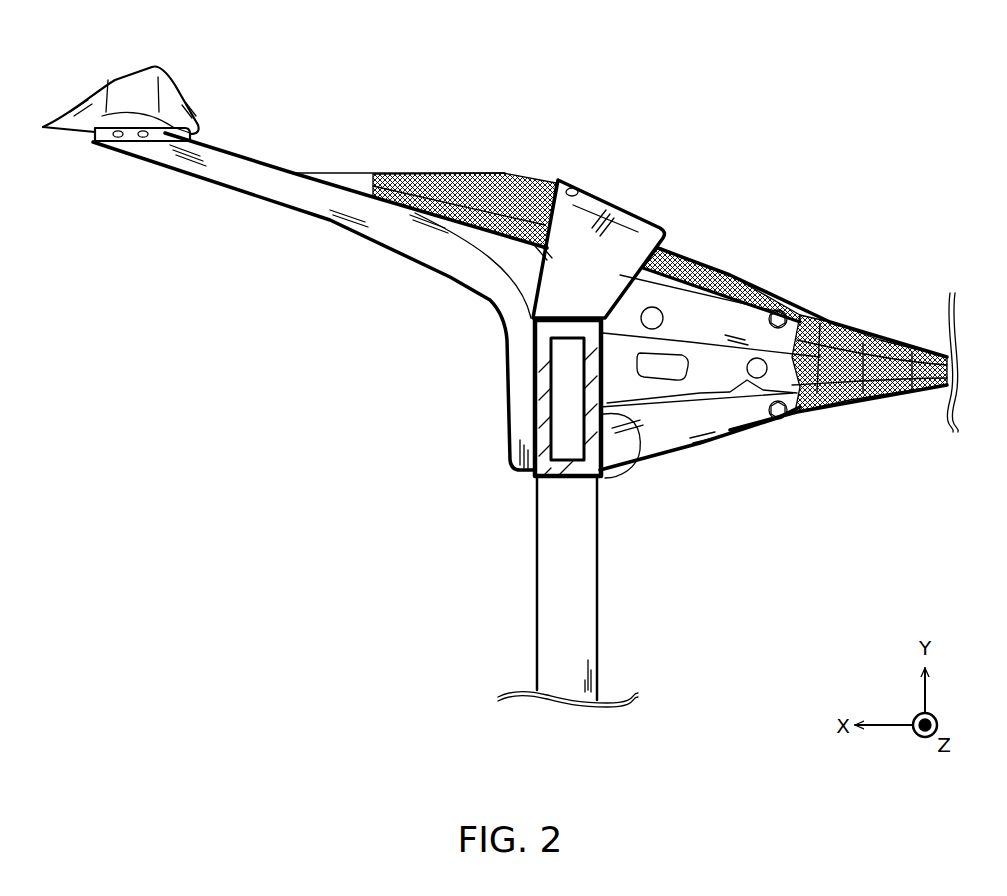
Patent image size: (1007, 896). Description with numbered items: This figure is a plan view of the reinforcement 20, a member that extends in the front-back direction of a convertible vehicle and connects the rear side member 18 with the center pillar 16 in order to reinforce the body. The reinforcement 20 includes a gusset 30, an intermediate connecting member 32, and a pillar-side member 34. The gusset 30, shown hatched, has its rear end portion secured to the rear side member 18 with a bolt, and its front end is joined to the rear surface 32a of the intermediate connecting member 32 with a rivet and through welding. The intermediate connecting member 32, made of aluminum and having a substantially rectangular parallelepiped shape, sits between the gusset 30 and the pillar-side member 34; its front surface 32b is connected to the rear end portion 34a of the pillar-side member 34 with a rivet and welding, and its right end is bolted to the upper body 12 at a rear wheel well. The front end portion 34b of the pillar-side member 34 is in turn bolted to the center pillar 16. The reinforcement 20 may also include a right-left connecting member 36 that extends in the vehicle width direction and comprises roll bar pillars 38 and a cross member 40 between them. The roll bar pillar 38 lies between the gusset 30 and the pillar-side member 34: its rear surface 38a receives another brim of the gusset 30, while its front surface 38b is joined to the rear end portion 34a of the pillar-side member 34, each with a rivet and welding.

The upper body 12 is at (693, 104).
The center pillar 16 is at (130, 85).
The rear side member 18 is at (857, 340).
The reinforcement 20 is at (355, 425).
The gusset 30 is at (680, 414).
The intermediate connecting member 32 is at (592, 238).
The rear surface 32a is at (693, 270).
The front surface 32b is at (530, 222).
The pillar-side member 34 is at (393, 236).
The rear end portion 34a is at (505, 333).
The front end portion 34b is at (150, 145).
The right-left connecting member 36 is at (424, 540).
The roll bar pillar 38 is at (553, 466).
The rear surface 38a is at (622, 430).
The front surface 38b is at (530, 418).
The cross member 40 is at (560, 592).